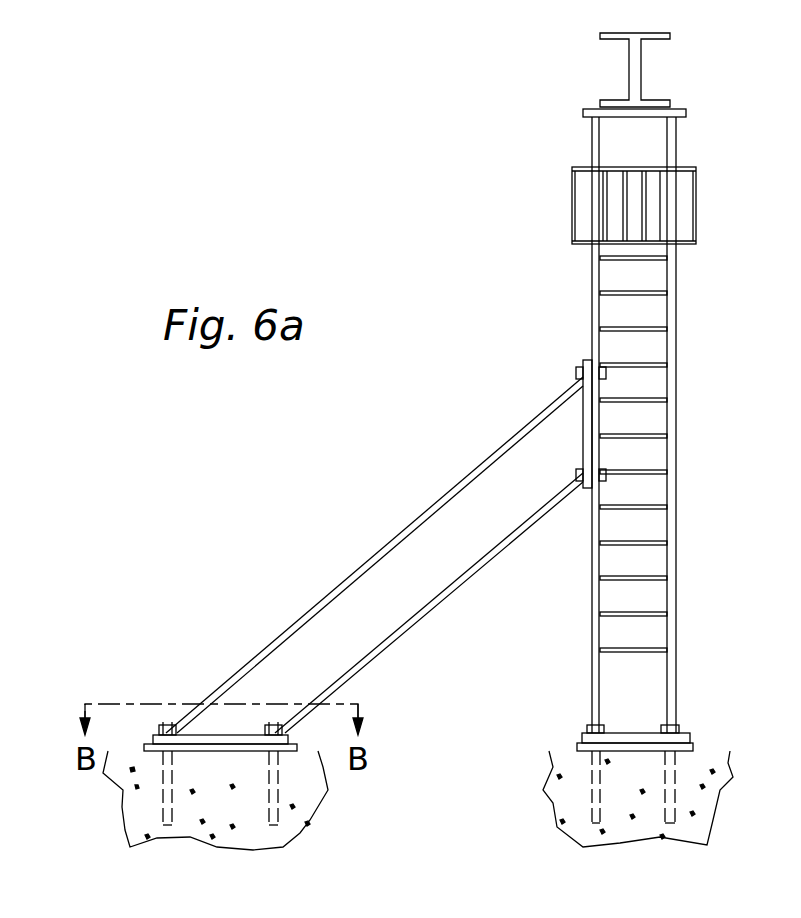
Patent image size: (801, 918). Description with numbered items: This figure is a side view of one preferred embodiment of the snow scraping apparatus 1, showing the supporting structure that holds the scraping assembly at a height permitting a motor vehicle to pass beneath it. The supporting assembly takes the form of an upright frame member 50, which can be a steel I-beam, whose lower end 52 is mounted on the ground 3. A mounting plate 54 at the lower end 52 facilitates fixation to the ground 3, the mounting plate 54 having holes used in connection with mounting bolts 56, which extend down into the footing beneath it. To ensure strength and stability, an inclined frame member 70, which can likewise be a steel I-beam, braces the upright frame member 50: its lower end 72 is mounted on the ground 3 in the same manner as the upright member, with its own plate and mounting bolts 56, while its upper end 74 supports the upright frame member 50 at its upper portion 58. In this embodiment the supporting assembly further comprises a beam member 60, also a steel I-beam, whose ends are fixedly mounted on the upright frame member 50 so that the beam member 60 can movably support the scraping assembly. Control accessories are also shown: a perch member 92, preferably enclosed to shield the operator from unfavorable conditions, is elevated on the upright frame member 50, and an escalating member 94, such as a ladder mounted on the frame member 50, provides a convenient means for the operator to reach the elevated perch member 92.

The snow scraping apparatus 1 is at (307, 190).
The ground 3 is at (262, 837).
The upright frame member 50 is at (570, 587).
The lower end 52 is at (641, 723).
The mounting plate 54 is at (585, 733).
The mounting bolts 56 is at (170, 807).
The upper portion 58 is at (677, 343).
The beam member 60 is at (634, 72).
The inclined frame member 70 is at (452, 553).
The lower end 72 is at (232, 718).
The upper end 74 is at (573, 413).
The perch member 92 is at (572, 202).
The escalating member 94 is at (645, 507).